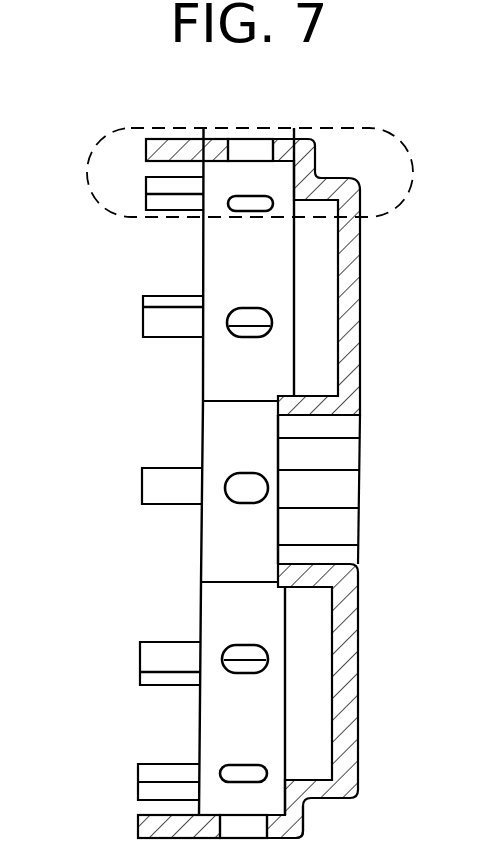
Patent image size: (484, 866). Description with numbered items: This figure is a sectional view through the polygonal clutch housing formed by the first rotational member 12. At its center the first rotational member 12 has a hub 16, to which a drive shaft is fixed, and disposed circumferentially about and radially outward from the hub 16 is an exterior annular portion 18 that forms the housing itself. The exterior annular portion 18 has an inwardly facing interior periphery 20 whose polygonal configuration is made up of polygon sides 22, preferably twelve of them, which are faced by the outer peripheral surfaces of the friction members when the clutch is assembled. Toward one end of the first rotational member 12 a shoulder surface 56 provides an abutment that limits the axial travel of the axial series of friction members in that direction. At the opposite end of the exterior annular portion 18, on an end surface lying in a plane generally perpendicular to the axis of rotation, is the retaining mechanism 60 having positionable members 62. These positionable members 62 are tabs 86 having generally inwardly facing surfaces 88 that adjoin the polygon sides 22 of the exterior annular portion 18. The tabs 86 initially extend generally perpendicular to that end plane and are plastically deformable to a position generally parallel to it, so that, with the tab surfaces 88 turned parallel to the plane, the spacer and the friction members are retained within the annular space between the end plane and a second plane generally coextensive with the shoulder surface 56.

The first rotational member 12 is at (112, 322).
The hub 16 is at (335, 576).
The exterior annular portion 18 is at (218, 604).
The interior periphery 20 is at (226, 694).
The polygon sides 22 is at (218, 548).
The shoulder surface 56 is at (290, 800).
The retaining mechanism 60 is at (190, 112).
The positionable members 62 is at (172, 203).
The tabs 86 is at (155, 327).
The inwardly facing surfaces 88 is at (173, 318).